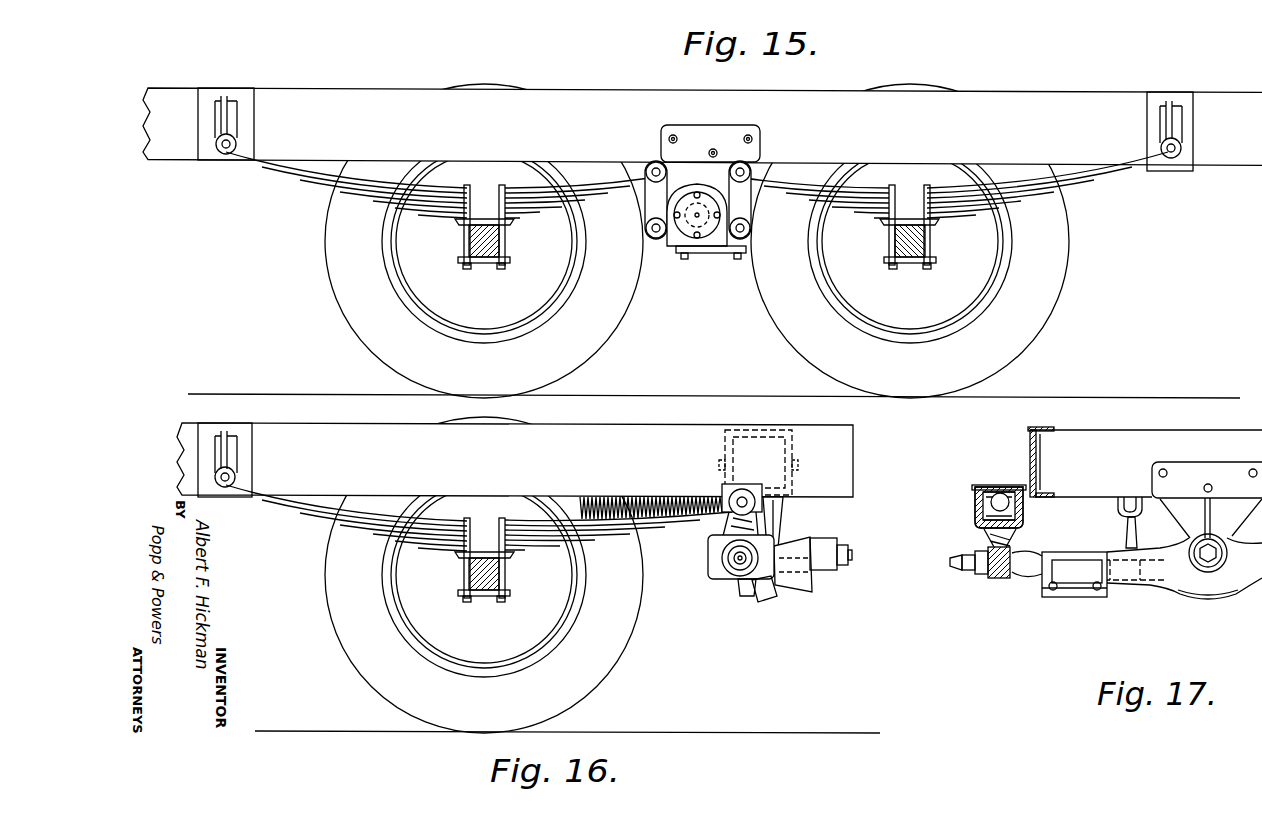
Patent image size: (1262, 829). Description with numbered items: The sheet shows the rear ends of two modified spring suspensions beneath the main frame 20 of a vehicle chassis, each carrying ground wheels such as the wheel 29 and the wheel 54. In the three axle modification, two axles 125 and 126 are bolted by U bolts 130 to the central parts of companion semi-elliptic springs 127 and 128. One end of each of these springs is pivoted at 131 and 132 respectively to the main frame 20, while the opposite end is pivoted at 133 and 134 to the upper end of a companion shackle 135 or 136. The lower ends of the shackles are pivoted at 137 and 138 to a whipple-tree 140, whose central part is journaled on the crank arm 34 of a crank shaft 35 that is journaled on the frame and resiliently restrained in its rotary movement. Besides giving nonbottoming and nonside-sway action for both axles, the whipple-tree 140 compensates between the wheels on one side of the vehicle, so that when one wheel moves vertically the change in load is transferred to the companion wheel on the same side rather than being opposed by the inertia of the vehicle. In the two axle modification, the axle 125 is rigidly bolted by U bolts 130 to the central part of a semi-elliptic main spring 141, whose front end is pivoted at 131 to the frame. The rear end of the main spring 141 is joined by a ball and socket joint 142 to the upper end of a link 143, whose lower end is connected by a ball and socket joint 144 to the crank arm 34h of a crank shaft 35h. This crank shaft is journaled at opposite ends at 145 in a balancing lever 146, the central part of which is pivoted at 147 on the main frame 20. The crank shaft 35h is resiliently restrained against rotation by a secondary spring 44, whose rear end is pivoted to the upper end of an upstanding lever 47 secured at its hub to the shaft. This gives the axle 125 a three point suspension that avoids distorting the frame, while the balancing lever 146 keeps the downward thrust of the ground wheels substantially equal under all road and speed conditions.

In FIG. 15, the main frame 20 is at (303, 91).
In FIG. 16, the main frame 20 is at (295, 423).
In FIG. 17, the main frame 20 is at (1034, 429).
In FIG. 15, the wheel 29 is at (568, 352).
In FIG. 16, the wheel 29 is at (575, 683).
In FIG. 15, the wheel 54 is at (1018, 337).
In FIG. 15, the crank arm 34 is at (696, 194).
In FIG. 15, the crank shaft 35 is at (705, 255).
In FIG. 15, the axle 125 is at (462, 241).
In FIG. 16, the axle 125 is at (462, 573).
In FIG. 15, the axle 126 is at (932, 243).
In FIG. 15, the semi-elliptic spring 127 is at (287, 176).
In FIG. 15, the semi-elliptic spring 128 is at (1085, 190).
In FIG. 15, the U bolts 130 is at (503, 186).
In FIG. 16, the U bolts 130 is at (503, 519).
In FIG. 15, the pivot 131 is at (222, 154).
In FIG. 16, the pivot 131 is at (220, 491).
In FIG. 15, the pivot 132 is at (1176, 160).
In FIG. 15, the pivot 133 is at (650, 164).
In FIG. 15, the pivot 134 is at (746, 164).
In FIG. 15, the shackle 135 is at (650, 206).
In FIG. 15, the shackle 136 is at (741, 207).
In FIG. 15, the pivot 137 is at (655, 238).
In FIG. 15, the pivot 138 is at (738, 238).
In FIG. 15, the whipple-tree 140 is at (670, 246).
In FIG. 16, the semi-elliptic main spring 141 is at (284, 514).
In FIG. 17, the semi-elliptic main spring 141 is at (1000, 490).
In FIG. 16, the ball and socket joint 142 is at (744, 490).
In FIG. 17, the ball and socket joint 142 is at (990, 503).
In FIG. 16, the link 143 is at (752, 527).
In FIG. 17, the link 143 is at (976, 520).
In FIG. 16, the crank arm 34h is at (733, 557).
In FIG. 17, the crank arm 34h is at (1002, 579).
In FIG. 16, the crank shaft 35h is at (767, 586).
In FIG. 16, the ball and socket joint 144 is at (733, 576).
In FIG. 16, the journal 145 is at (747, 594).
In FIG. 17, the journal 145 is at (1062, 598).
In FIG. 16, the balancing lever 146 is at (798, 578).
In FIG. 17, the balancing lever 146 is at (1158, 592).
In FIG. 16, the pivot 147 is at (852, 552).
In FIG. 17, the pivot 147 is at (1210, 574).
In FIG. 17, the secondary spring 44 is at (1118, 501).
In FIG. 16, the upstanding lever 47 is at (640, 497).
In FIG. 17, the upstanding lever 47 is at (1126, 523).